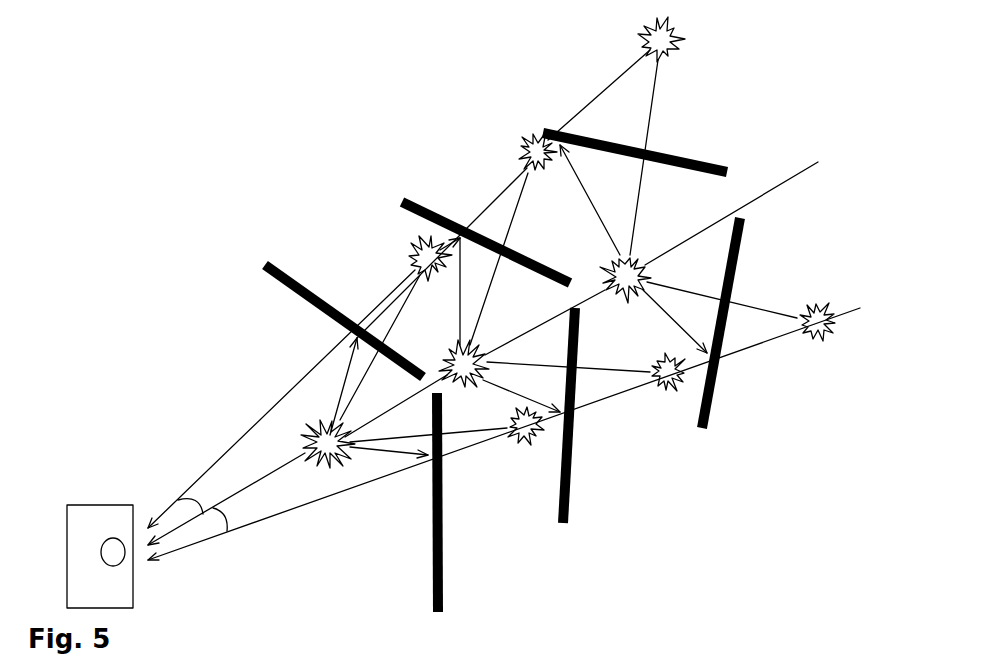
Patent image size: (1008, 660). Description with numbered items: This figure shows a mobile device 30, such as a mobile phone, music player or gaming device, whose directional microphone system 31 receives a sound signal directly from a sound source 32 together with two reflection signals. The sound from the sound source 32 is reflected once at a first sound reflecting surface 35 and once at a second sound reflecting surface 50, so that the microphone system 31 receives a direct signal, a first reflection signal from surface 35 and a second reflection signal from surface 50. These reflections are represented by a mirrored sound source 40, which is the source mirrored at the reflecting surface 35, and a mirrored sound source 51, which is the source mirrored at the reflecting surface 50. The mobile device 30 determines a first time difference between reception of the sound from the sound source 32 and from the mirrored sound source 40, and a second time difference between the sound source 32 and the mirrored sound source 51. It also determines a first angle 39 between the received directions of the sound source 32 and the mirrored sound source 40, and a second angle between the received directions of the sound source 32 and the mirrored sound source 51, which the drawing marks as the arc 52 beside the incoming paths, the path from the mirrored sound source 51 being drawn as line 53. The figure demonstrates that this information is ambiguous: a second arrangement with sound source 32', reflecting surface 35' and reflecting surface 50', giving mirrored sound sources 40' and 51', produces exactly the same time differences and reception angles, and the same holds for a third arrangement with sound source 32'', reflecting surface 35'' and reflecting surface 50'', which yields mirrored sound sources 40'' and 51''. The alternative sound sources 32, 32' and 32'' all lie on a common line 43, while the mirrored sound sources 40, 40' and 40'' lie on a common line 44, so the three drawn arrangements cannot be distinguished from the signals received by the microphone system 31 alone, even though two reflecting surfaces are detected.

The mobile device 30 is at (99, 503).
The directional microphone system 31 is at (117, 565).
The sound source 32 is at (404, 412).
The sound source 32' is at (503, 338).
The sound source 32'' is at (678, 249).
The sound reflecting surface 35 is at (476, 502).
The reflecting surface 35' is at (602, 415).
The reflecting surface 35'' is at (740, 336).
The first angle 39 is at (213, 525).
The mirrored sound source 40 is at (526, 463).
The mirrored sound source 40' is at (668, 409).
The mirrored sound source 40'' is at (815, 365).
The common line 43 is at (803, 168).
The common line 44 is at (282, 513).
The second sound reflecting surface 50 is at (312, 321).
The reflecting surface 50' is at (476, 209).
The reflecting surface 50'' is at (646, 136).
The mirrored sound source 51 is at (402, 256).
The mirrored sound source 51' is at (553, 110).
The mirrored sound source 51'' is at (624, 136).
The angle 52 is at (178, 513).
The ray 53 is at (257, 423).